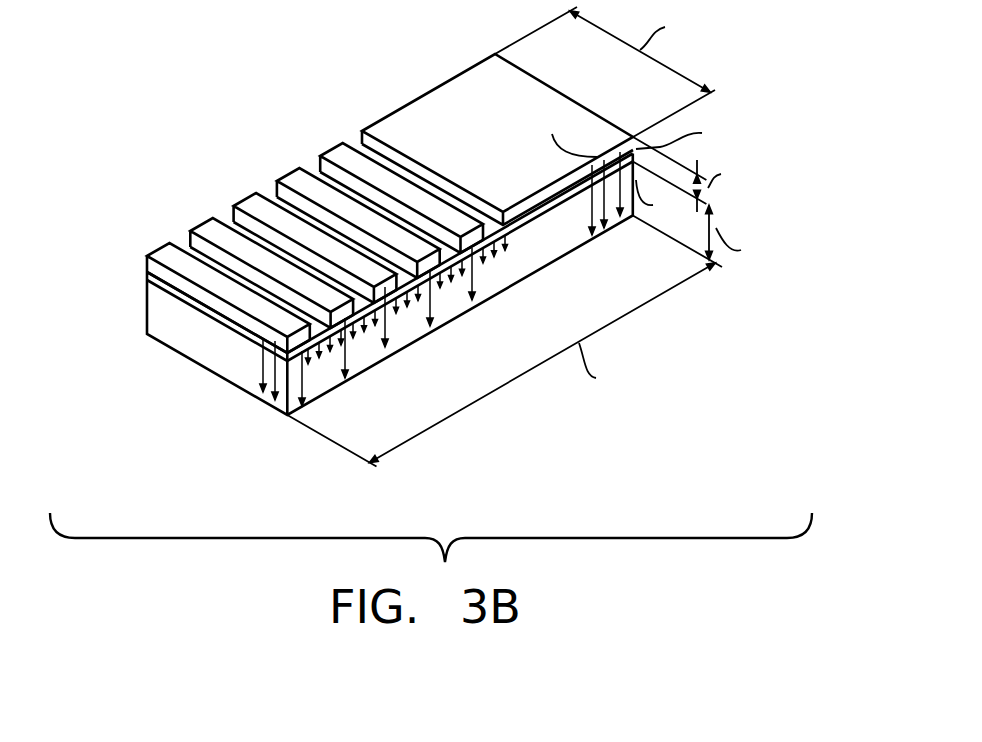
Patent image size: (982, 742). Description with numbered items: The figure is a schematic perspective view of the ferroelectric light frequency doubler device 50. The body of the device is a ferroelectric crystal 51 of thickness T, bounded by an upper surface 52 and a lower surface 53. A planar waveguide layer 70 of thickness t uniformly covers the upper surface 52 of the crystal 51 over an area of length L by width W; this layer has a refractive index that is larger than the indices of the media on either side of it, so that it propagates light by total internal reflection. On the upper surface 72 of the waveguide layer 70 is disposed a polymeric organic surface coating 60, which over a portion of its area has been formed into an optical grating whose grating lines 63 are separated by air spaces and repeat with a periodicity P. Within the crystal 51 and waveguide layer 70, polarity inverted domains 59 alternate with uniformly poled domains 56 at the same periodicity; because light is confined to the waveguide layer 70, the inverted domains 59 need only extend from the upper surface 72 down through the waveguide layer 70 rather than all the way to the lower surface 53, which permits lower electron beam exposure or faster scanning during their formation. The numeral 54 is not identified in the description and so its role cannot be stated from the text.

The ferroelectric light frequency doubler device 50 is at (175, 134).
The crystal 51 is at (287, 418).
The upper surface of crystal 52 is at (507, 230).
The lower surface of crystal 53 is at (501, 278).
The first stripe rib 54 is at (147, 270).
The uniformly poled domains 56 is at (273, 368).
The polarity inverted domains 59 is at (405, 292).
The surface coating 60 is at (470, 84).
The grating lines 63 is at (256, 193).
The planar waveguide layer 70 is at (596, 232).
The upper surface of waveguide layer 72 is at (357, 149).